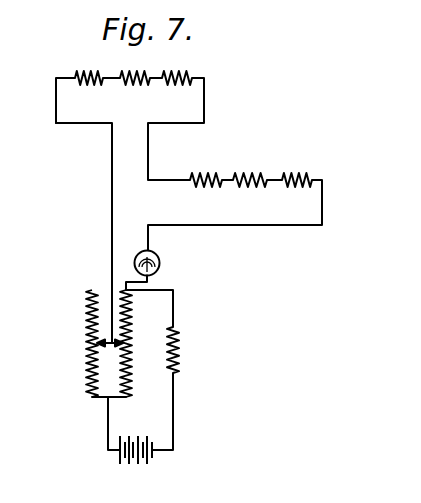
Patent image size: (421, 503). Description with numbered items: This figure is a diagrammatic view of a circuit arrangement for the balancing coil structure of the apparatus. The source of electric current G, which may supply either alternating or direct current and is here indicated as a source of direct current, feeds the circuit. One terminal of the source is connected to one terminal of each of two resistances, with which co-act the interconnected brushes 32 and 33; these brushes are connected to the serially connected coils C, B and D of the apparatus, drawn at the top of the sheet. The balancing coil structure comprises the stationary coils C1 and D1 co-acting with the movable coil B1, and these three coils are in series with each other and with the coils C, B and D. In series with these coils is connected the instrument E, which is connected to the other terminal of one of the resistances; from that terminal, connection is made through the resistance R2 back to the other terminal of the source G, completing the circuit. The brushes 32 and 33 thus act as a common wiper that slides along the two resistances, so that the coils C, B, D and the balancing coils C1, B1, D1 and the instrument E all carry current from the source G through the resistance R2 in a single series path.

The coil C is at (93, 72).
The coil B is at (147, 72).
The coil D is at (174, 72).
The stationary coil C1 is at (206, 174).
The movable coil B1 is at (252, 174).
The stationary coil D1 is at (300, 175).
The instrument E is at (160, 263).
The brush 32 is at (94, 343).
The brush 33 is at (128, 343).
The resistance R2 is at (177, 356).
The source of electric current G is at (140, 437).